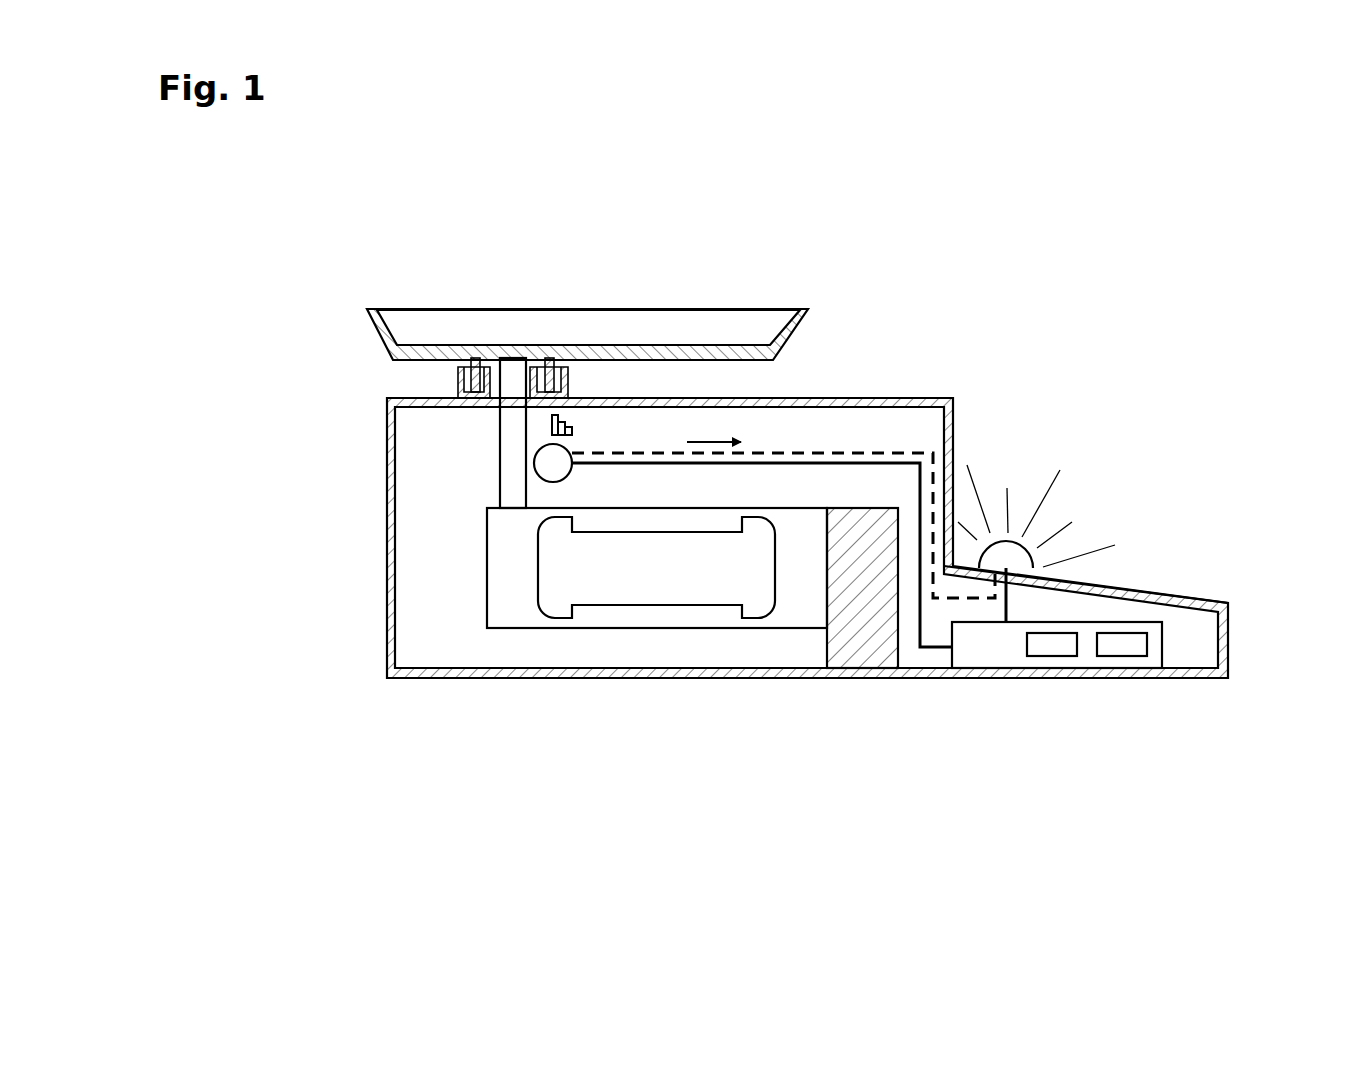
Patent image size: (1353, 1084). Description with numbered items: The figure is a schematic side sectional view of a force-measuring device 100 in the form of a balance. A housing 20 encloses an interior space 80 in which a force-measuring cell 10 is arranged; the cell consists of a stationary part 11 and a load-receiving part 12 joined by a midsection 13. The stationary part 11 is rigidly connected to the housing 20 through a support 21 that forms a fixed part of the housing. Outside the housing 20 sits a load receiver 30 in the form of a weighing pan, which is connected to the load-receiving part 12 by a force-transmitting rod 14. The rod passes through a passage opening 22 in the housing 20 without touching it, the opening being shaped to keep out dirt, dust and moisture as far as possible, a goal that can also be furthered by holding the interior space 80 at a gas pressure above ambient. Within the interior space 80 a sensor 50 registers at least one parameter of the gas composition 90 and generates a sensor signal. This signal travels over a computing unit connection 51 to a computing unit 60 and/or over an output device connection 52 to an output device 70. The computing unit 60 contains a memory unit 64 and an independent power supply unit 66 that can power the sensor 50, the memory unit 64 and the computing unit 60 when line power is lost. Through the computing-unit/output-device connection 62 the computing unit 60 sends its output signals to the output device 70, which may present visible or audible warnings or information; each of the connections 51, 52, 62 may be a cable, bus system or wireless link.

The force-measuring device 100 is at (318, 301).
The load receiver 30 is at (455, 323).
The passage opening 22 is at (475, 377).
The gas composition 90 is at (548, 427).
The force-transmitting rod 14 is at (510, 445).
The sensor 50 is at (533, 468).
The interior space 80 is at (437, 542).
The housing 20 is at (445, 675).
The load-receiving part 12 is at (513, 580).
The force-measuring cell 10 is at (612, 650).
The midsection 13 is at (660, 617).
The stationary part 11 is at (795, 602).
The support 21 is at (857, 613).
The computing unit 60 is at (993, 652).
The memory unit 64 is at (1063, 647).
The independent power supply unit 66 is at (1128, 642).
The output device 70 is at (1005, 562).
The computing-unit/output-device connection 62 is at (1043, 573).
The computing unit connection 51 is at (853, 462).
The output device connection 52 is at (897, 453).